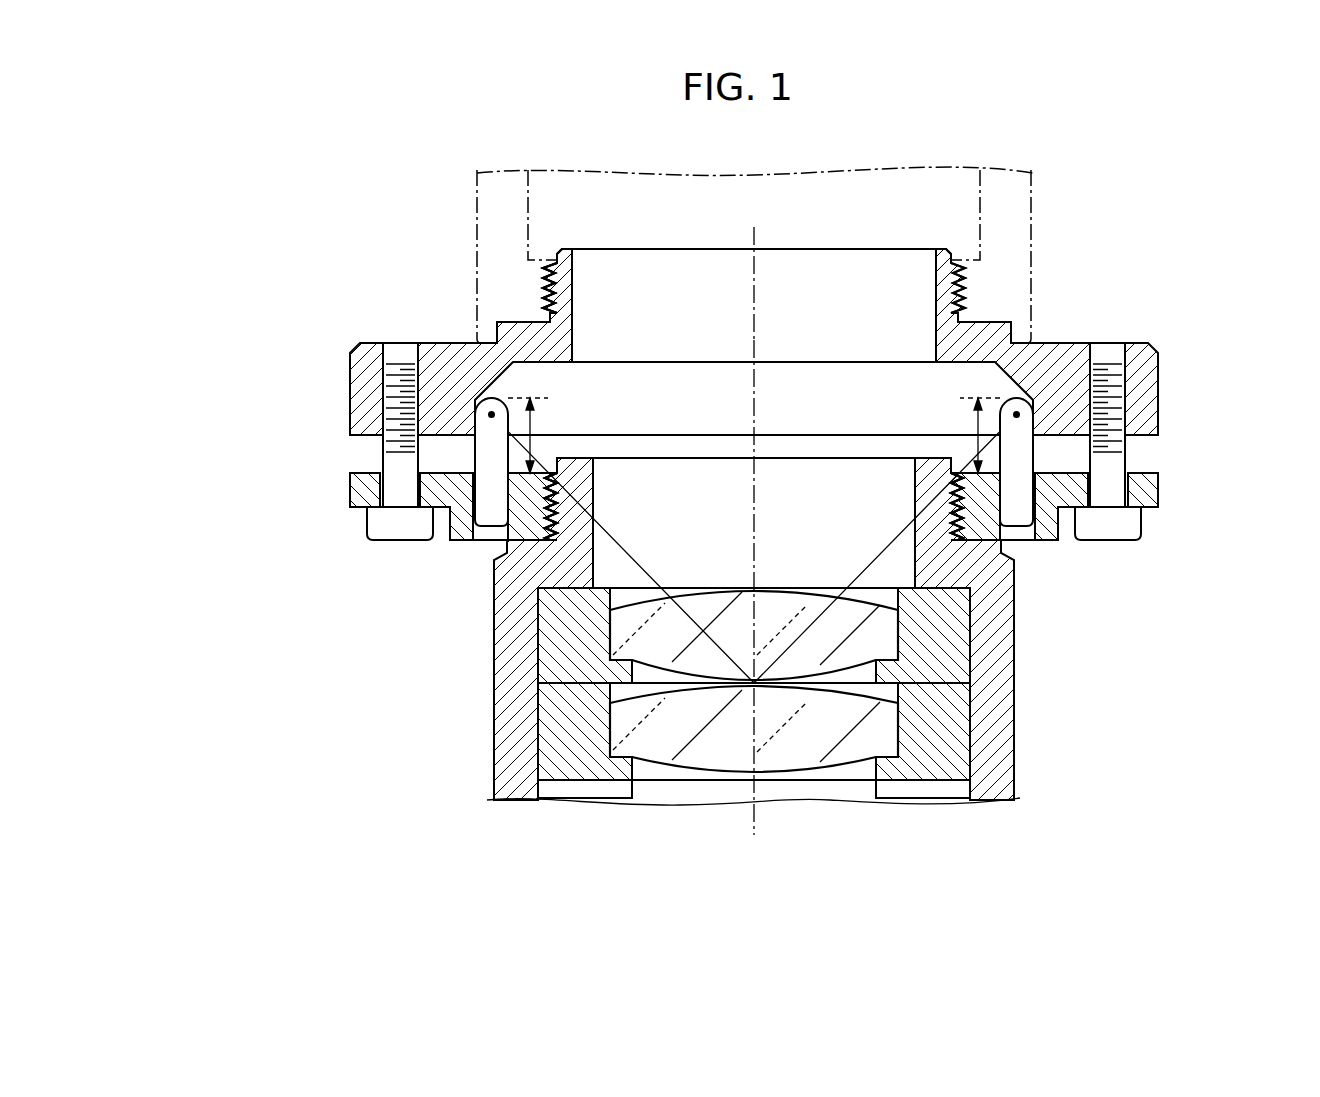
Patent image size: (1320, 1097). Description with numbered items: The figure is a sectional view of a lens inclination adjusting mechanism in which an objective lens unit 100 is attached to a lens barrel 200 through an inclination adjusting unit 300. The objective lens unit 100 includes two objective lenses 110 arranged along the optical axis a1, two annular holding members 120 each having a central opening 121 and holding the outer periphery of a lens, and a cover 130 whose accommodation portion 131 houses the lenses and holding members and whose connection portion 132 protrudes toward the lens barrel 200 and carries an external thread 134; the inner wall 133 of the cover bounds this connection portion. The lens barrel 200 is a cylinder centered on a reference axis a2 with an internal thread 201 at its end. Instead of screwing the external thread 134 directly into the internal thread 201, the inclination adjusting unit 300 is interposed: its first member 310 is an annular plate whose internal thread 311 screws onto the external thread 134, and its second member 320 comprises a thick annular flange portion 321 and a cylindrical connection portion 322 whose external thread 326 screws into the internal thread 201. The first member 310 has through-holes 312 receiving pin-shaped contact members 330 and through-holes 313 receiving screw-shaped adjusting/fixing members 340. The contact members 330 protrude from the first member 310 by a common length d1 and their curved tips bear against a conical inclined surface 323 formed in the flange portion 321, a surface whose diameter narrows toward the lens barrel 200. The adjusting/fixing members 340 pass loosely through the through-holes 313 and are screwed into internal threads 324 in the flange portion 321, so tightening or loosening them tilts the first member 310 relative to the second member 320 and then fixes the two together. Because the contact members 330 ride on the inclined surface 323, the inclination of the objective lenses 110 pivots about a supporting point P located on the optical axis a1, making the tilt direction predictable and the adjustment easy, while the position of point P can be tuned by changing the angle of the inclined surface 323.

The objective lens unit 100 is at (864, 587).
The objective lens 110 is at (882, 727).
The holding member 120 is at (935, 640).
The opening 121 is at (868, 785).
The cover 130 is at (842, 584).
The accommodation portion 131 is at (995, 633).
The connection portion 132 is at (930, 578).
The holder inner surface 133 is at (912, 493).
The external thread 134 is at (940, 523).
The lens barrel 200 is at (823, 255).
The internal thread 201 is at (955, 287).
The inclination adjusting unit 300 is at (737, 536).
The first member 310 is at (671, 578).
The internal thread 311 is at (505, 560).
The through-hole 312 is at (473, 543).
The through-hole 313 is at (380, 492).
The second member 320 is at (679, 338).
The flange portion 321 is at (347, 406).
The connection portion 322 is at (556, 269).
The inclined surface 323 is at (383, 381).
The internal thread 324 is at (358, 349).
The external thread 326 is at (545, 300).
The contact member 330 is at (490, 492).
The adjusting/fixing member 340 is at (407, 443).
The optical axis a1 is at (757, 506).
The reference axis a2 is at (754, 270).
The protrusion length d1 is at (540, 428).
The supporting point P is at (750, 680).